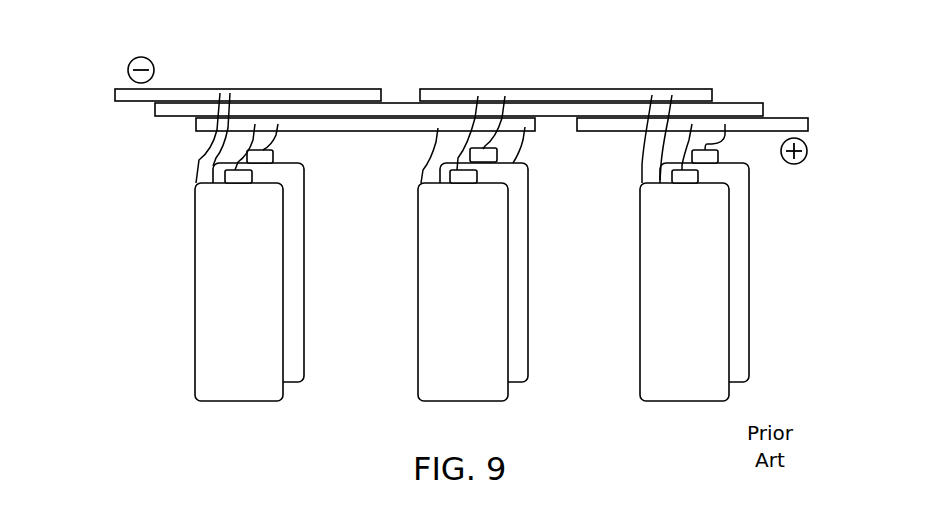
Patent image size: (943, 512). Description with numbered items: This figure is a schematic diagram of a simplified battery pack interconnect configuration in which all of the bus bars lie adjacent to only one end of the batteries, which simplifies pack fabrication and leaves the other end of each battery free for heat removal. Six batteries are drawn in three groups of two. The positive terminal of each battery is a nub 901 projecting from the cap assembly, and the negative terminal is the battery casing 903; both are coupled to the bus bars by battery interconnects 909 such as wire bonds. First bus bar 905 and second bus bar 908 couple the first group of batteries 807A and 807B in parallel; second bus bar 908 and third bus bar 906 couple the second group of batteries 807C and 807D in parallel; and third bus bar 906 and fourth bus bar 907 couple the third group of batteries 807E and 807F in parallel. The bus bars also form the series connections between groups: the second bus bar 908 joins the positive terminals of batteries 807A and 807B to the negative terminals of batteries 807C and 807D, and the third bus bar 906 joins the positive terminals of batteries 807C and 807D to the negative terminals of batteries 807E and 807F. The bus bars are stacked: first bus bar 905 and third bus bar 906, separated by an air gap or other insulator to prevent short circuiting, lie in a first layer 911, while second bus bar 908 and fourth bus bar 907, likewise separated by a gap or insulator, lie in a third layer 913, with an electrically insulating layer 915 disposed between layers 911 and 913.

The first bus bar 905 is at (278, 88).
The third bus bar 906 is at (558, 88).
The fourth bus bar 907 is at (767, 134).
The second bus bar 908 is at (380, 133).
The electrically insulating layer 915 is at (156, 110).
The first layer 911 is at (116, 95).
The third layer 913 is at (197, 124).
The nub 901 is at (273, 155).
The battery casing 903 is at (530, 165).
The battery interconnect 909 is at (720, 140).
The battery 807A is at (283, 307).
The battery 807B is at (304, 208).
The battery 807C is at (508, 267).
The battery 807D is at (528, 193).
The battery 807E is at (729, 280).
The battery 807F is at (749, 213).